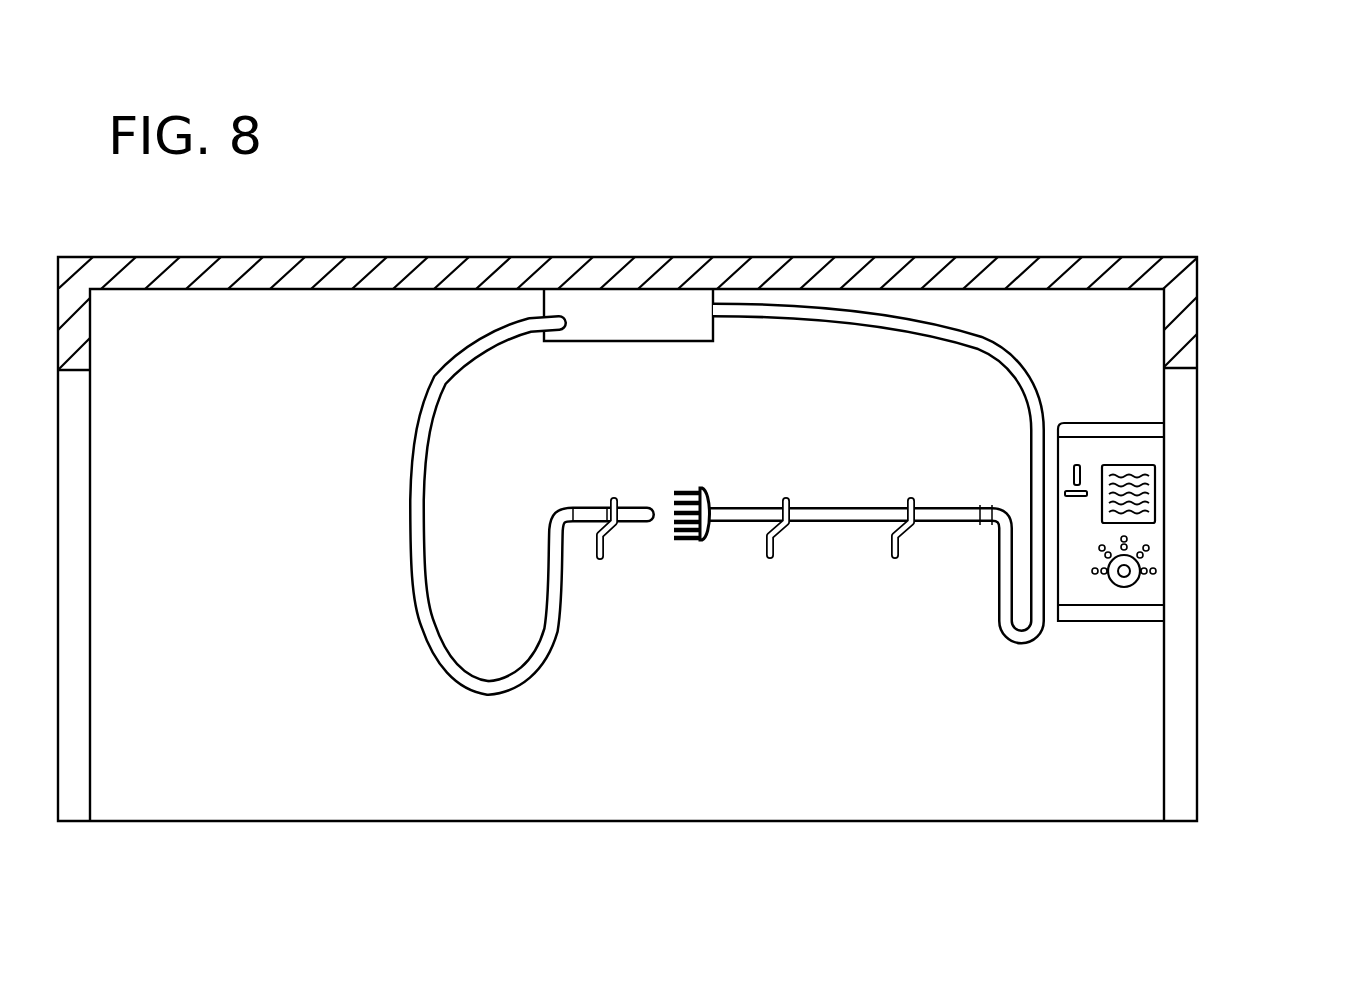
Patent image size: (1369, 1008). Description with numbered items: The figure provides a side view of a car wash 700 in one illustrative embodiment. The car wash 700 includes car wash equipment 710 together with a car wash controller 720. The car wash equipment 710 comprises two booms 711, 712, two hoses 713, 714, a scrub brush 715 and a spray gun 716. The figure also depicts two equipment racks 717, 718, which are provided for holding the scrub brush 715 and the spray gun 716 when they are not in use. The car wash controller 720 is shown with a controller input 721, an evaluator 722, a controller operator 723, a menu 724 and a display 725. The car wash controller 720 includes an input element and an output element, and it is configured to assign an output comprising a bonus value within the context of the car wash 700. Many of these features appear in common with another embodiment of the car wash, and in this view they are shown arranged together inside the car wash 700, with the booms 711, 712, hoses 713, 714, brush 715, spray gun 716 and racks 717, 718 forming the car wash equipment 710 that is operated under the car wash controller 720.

The car wash 700 is at (1216, 162).
The car wash equipment 710 is at (846, 170).
The boom 711 is at (826, 322).
The boom 712 is at (505, 342).
The hose 713 is at (1033, 393).
The hose 714 is at (438, 650).
The scrub brush 715 is at (822, 526).
The spray gun 716 is at (640, 526).
The equipment rack 717 is at (783, 488).
The equipment rack 718 is at (597, 528).
The car wash controller 720 is at (1180, 528).
The controller input 721 is at (1084, 463).
The evaluator 722 is at (1137, 463).
The controller operator 723 is at (1156, 515).
The menu 724 is at (1135, 585).
The display 725 is at (1156, 474).